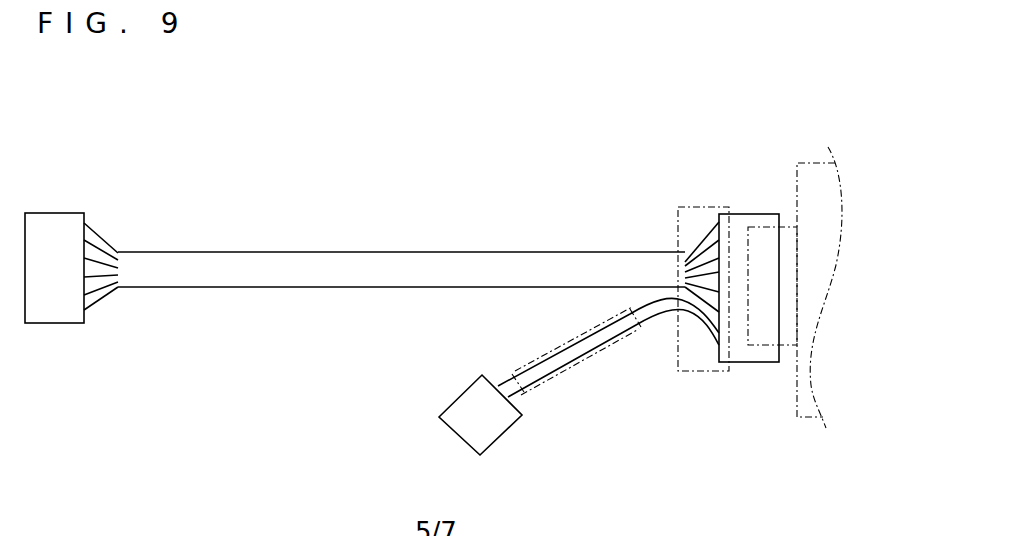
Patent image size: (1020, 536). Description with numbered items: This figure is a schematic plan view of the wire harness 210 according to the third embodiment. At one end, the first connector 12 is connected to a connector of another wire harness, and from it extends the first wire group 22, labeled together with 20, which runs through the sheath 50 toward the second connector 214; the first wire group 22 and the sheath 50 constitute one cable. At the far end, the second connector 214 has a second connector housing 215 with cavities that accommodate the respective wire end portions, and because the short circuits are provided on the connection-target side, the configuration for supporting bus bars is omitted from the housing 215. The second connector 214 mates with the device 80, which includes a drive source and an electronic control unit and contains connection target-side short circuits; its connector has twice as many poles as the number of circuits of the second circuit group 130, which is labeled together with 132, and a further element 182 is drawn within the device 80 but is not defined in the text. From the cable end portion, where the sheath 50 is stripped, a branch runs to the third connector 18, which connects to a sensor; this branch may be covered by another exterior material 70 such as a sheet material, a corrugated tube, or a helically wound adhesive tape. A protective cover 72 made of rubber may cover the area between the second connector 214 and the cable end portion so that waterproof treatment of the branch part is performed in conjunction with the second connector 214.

The first connector 12 is at (44, 308).
The third connector 18 is at (488, 435).
The electric wire 20 is at (132, 248).
The first wire group 22 is at (104, 262).
The sheath 50 is at (361, 274).
The exterior material 70 is at (568, 363).
The protective cover 72 is at (700, 372).
The device 80 is at (818, 422).
The second circuit group 130 is at (368, 343).
The sheath portion 132 is at (103, 291).
The mating connector portion 182 is at (792, 348).
The wire harness 210 is at (401, 237).
The second connector 214 is at (745, 213).
The second connector housing 215 is at (732, 276).